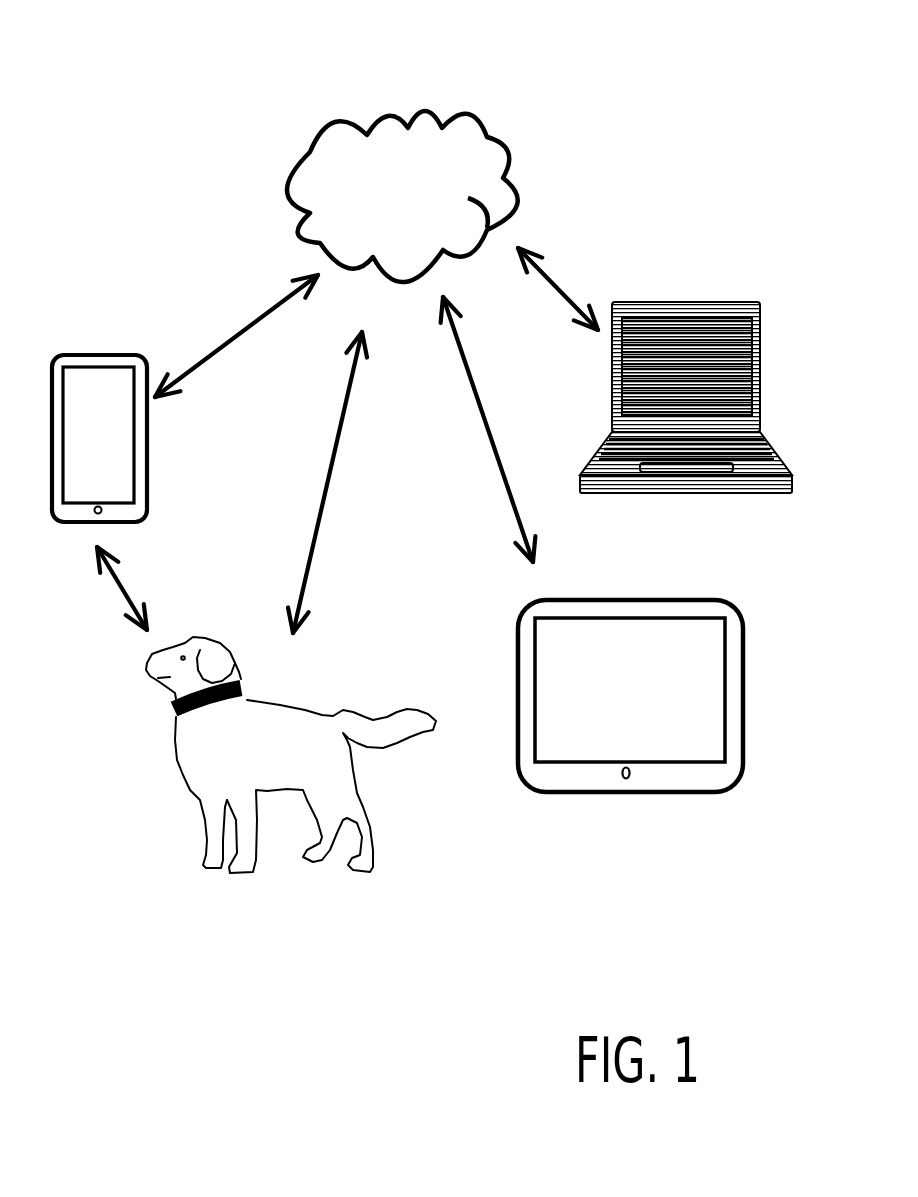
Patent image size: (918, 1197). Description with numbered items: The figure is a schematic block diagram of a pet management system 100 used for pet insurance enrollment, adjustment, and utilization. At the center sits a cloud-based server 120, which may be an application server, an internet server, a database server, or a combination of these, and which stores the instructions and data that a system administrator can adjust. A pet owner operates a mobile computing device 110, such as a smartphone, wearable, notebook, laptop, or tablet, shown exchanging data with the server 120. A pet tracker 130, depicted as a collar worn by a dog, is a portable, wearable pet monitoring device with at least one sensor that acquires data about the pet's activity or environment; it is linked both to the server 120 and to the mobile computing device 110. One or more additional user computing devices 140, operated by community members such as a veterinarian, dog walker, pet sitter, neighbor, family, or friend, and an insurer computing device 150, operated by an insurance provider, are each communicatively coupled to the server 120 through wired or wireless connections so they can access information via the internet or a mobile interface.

The pet management system 100 is at (163, 106).
The mobile computing device 110 is at (99, 406).
The cloud-based server 120 is at (402, 196).
The pet tracker 130 is at (291, 788).
The additional user computing device 140 is at (630, 696).
The insurer computing device 150 is at (686, 429).